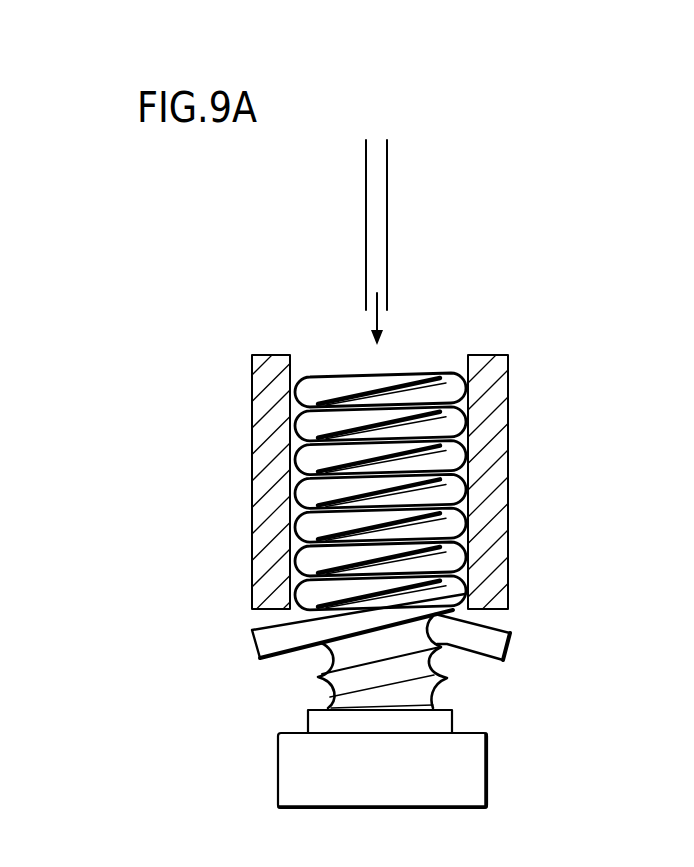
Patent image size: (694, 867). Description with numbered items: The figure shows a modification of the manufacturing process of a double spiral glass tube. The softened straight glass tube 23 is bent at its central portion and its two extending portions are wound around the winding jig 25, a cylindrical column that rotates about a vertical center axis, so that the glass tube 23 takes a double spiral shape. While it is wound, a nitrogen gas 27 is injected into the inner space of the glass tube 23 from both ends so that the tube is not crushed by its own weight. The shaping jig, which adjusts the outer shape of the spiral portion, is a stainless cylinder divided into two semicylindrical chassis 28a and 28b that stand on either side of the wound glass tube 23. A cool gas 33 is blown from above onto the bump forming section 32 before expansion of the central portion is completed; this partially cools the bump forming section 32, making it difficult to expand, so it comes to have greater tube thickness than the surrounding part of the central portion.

The glass tube 23 is at (313, 447).
The winding jig 25 is at (443, 727).
The nitrogen gas 27 is at (228, 651).
The semicylindrical chassis 28a is at (258, 440).
The semicylindrical chassis 28b is at (497, 423).
The bump forming section 32 is at (378, 383).
The cool gas 33 is at (376, 120).